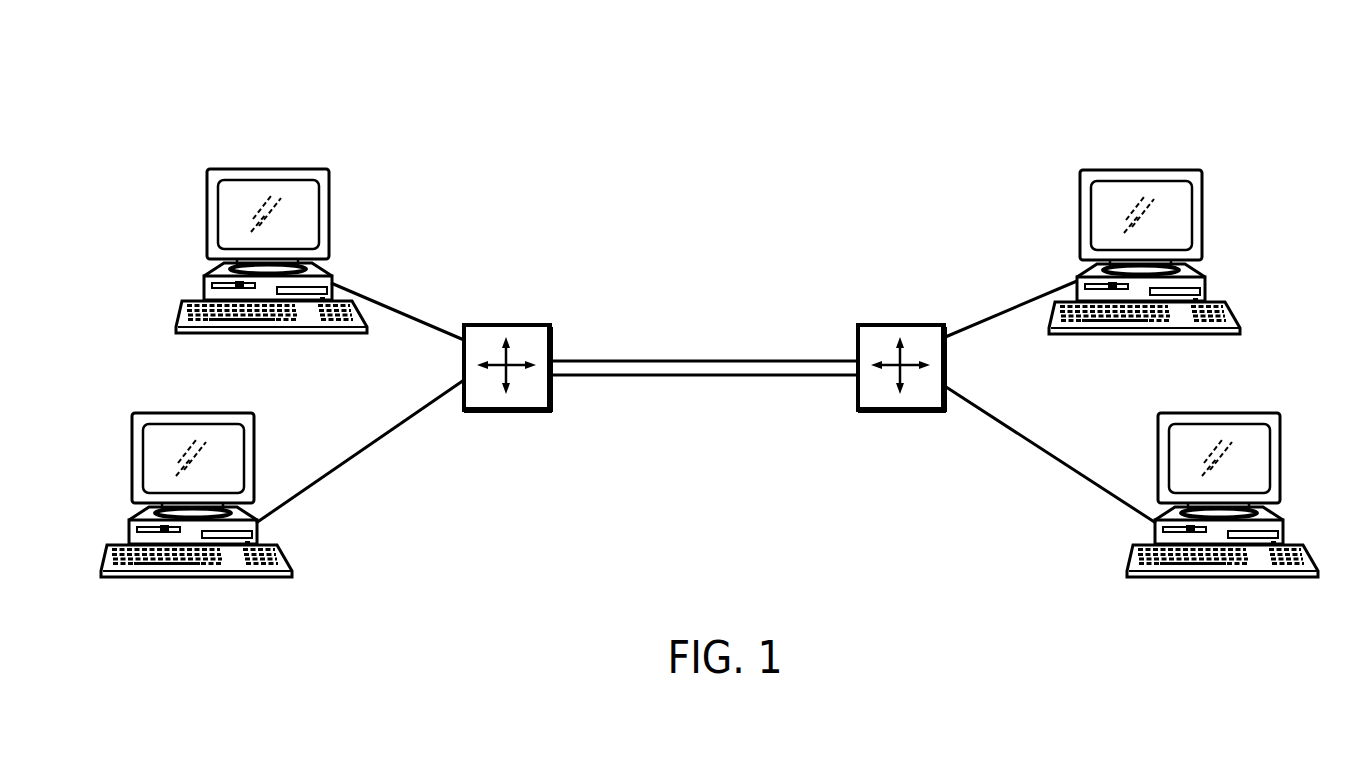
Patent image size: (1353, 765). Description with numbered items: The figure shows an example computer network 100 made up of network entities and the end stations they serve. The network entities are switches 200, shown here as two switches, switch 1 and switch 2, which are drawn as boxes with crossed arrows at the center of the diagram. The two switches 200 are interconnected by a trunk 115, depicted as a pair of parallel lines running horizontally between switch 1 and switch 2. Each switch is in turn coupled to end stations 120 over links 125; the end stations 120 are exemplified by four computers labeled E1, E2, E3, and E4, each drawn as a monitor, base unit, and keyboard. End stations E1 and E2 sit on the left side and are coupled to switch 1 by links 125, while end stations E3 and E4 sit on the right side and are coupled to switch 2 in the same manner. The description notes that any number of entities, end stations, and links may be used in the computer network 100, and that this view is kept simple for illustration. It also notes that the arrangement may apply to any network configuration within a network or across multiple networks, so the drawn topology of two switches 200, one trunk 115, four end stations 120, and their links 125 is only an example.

The network 100 is at (600, 154).
The end stations 120 is at (186, 194).
The end station E1 is at (271, 169).
The end station E2 is at (196, 413).
The end station E3 is at (1144, 171).
The end station E4 is at (1223, 413).
The links 125 is at (396, 307).
The switch 1 is at (514, 325).
The switch 2 is at (895, 325).
The switches 200 is at (900, 412).
The trunk 115 is at (718, 359).